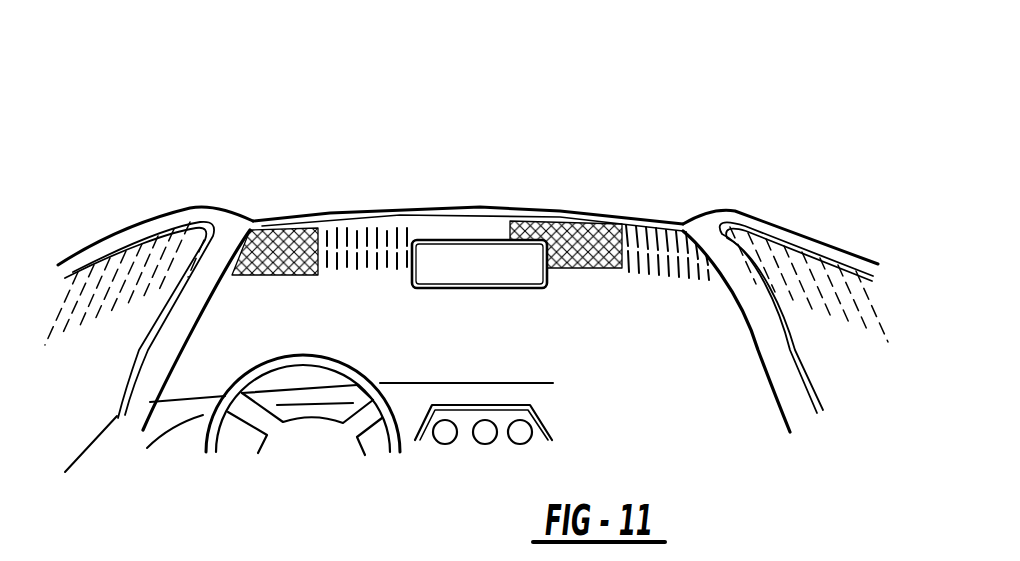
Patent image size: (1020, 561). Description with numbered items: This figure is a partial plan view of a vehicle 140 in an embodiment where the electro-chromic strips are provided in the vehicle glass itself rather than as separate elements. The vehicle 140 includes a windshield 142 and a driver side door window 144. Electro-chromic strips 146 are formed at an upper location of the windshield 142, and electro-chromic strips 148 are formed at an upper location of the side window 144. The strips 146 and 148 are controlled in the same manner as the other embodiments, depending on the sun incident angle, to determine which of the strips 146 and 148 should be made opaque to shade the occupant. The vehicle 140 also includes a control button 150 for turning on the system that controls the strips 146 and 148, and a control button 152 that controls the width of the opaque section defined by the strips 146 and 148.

The vehicle 140 is at (590, 182).
The windshield 142 is at (382, 318).
The driver side door window 144 is at (80, 365).
The electro-chromic strips 146 is at (335, 245).
The electro-chromic strips 148 is at (168, 245).
The control button 150 is at (445, 440).
The control button 152 is at (486, 425).